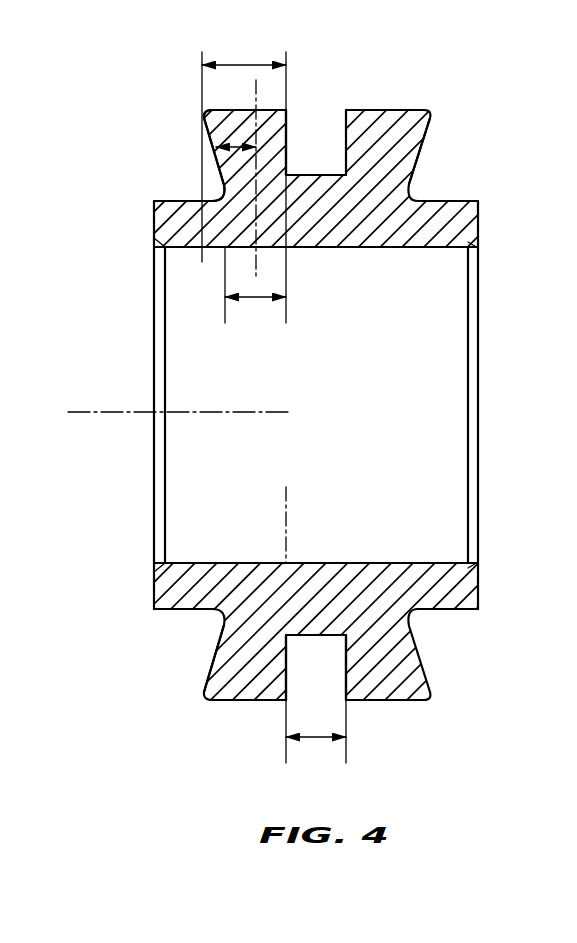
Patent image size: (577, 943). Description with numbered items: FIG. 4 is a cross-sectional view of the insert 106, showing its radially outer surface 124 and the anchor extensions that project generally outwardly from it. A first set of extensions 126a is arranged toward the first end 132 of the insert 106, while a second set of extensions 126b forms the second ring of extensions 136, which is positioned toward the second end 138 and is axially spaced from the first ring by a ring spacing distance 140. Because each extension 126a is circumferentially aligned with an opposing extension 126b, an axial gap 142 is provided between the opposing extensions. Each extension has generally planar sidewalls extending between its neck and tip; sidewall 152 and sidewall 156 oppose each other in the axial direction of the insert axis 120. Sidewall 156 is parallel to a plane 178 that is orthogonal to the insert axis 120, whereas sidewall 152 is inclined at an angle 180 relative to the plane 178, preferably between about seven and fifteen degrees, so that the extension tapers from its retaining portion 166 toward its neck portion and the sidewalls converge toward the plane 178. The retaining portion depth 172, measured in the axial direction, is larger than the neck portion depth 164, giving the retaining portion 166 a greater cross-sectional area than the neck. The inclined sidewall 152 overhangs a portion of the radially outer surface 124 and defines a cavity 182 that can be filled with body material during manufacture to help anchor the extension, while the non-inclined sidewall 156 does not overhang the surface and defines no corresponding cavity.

The insert 106 is at (490, 214).
The insert axis 120 is at (140, 412).
The radially outer surface 124 is at (169, 188).
The first set of extensions 126a is at (227, 662).
The second set of extensions 126b is at (412, 148).
The first end 132 is at (185, 618).
The second ring of extensions 136 is at (385, 105).
The second end 138 is at (439, 622).
The ring spacing distance 140 is at (315, 740).
The axial gap 142 is at (315, 663).
The sidewall 152 is at (196, 121).
The sidewall 156 is at (287, 127).
The neck portion depth 164 is at (256, 300).
The retaining portion 166 is at (199, 105).
The retaining portion depth 172 is at (245, 63).
The plane 178 is at (256, 270).
The angle 180 is at (236, 141).
The cavity 182 is at (209, 175).